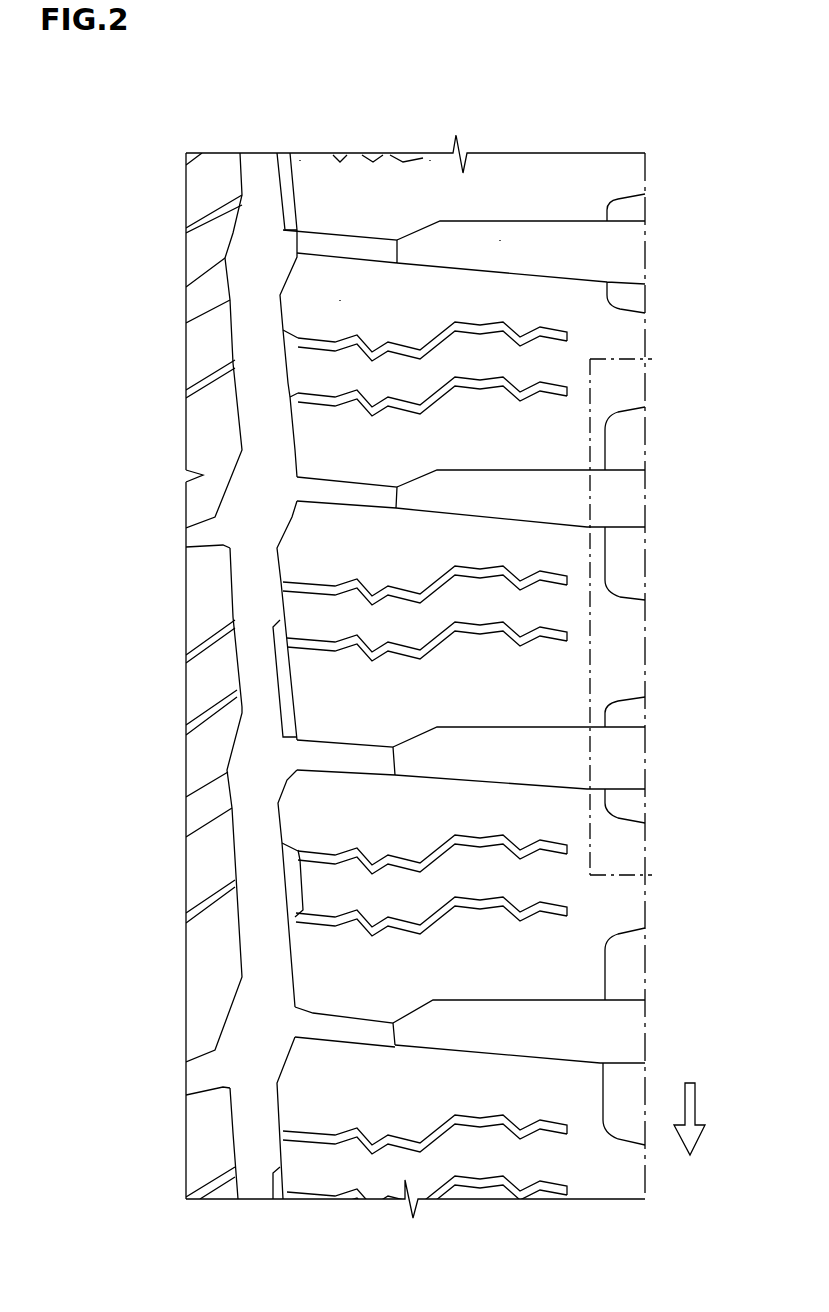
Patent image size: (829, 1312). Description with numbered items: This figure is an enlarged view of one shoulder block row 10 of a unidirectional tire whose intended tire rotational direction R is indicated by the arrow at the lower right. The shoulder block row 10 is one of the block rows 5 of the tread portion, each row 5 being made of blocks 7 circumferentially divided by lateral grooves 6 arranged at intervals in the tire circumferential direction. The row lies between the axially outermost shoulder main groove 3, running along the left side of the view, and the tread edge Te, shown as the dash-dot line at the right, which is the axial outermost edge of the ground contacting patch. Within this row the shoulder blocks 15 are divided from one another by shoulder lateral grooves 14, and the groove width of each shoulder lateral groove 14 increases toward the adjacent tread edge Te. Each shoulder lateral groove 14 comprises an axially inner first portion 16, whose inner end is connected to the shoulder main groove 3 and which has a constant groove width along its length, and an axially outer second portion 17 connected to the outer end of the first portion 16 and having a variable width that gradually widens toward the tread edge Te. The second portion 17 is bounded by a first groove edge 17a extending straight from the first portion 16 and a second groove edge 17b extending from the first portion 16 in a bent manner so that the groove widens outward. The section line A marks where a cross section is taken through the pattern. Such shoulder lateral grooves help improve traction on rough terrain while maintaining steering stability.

The shoulder main groove 3 is at (262, 192).
The block row 5 is at (355, 194).
The lateral groove 6 is at (481, 244).
The block 7 is at (353, 302).
The shoulder block row 10 is at (433, 194).
The shoulder lateral groove 14 is at (397, 669).
The shoulder block 15 is at (519, 357).
The first portion 16 is at (336, 754).
The second portion 17 is at (426, 669).
The first groove edge 17a is at (560, 786).
The second groove edge 17b is at (553, 728).
The tread edge Te is at (647, 178).
The section line A- A is at (652, 359).
The tire rotational direction R is at (689, 1135).